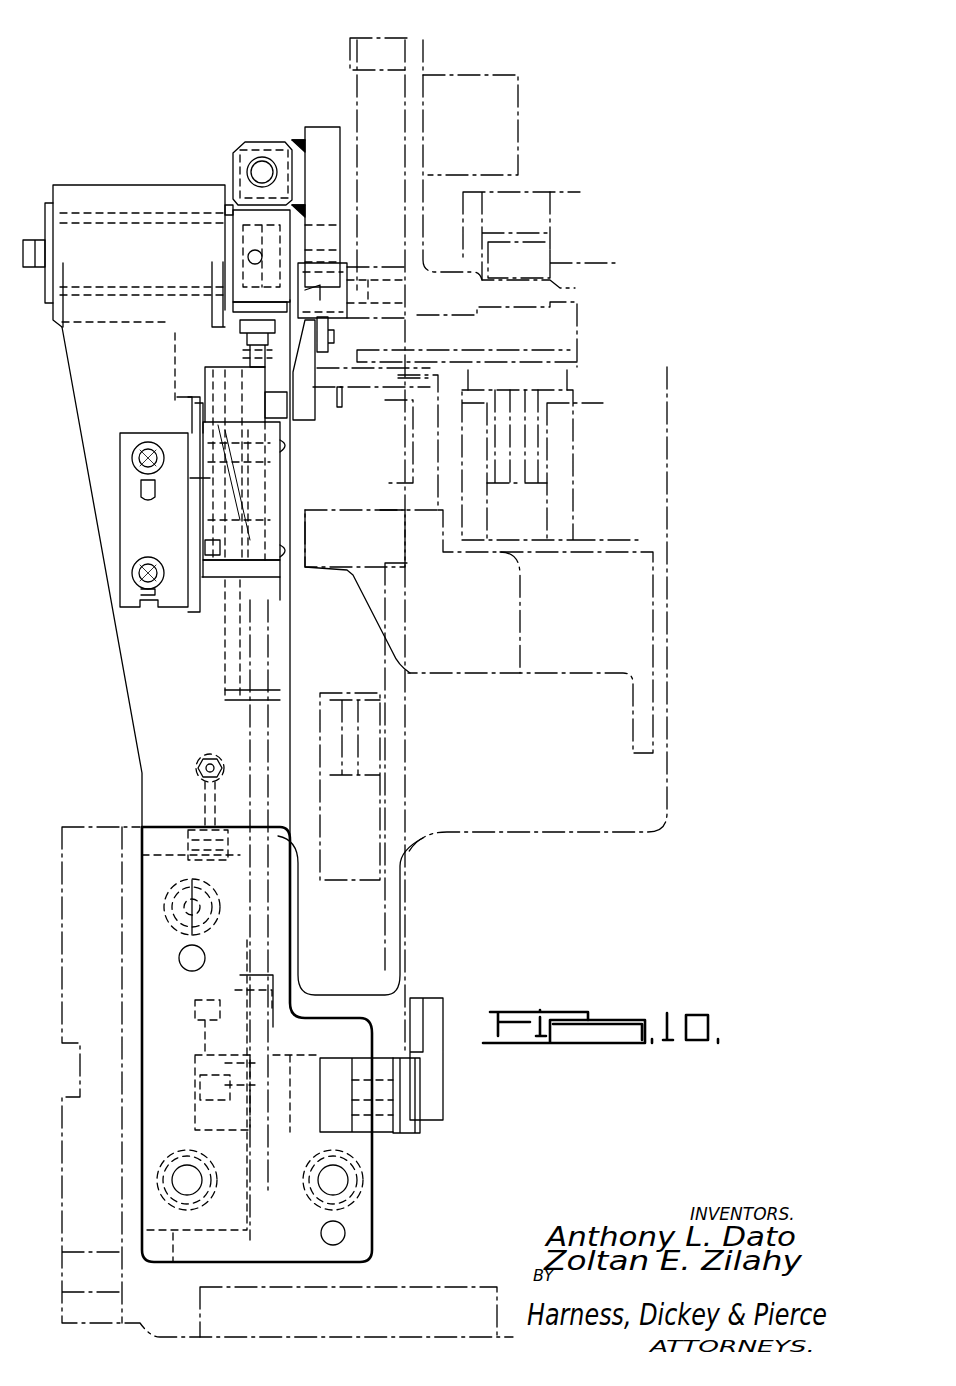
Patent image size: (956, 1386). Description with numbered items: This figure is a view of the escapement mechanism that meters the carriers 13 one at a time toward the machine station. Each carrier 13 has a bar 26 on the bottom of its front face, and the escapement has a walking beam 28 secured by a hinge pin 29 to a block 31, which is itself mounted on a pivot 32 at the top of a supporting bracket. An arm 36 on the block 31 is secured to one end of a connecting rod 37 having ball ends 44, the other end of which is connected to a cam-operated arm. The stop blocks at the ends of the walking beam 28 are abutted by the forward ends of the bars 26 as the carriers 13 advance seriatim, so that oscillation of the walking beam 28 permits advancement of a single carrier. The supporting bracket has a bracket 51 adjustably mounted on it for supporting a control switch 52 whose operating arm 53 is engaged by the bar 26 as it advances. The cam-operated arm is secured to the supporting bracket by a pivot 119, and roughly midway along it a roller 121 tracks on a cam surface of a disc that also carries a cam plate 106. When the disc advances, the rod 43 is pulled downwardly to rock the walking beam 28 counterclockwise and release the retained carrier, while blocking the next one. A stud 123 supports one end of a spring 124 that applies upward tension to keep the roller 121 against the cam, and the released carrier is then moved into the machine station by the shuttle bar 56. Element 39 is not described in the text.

The carrier 13 is at (395, 58).
The bar 26 is at (340, 297).
The walking beam 28 is at (322, 128).
The hinge pin 29 is at (263, 160).
The block 31 is at (232, 195).
The pivot 32 is at (75, 240).
The arm 36 is at (237, 242).
The connecting rod 37 is at (240, 323).
The slide plate 39 is at (290, 650).
The rod 43 is at (290, 748).
The ball ends 44 is at (195, 1033).
The bracket 51 is at (120, 503).
The control switch 52 is at (280, 383).
The operating arm 53 is at (300, 407).
The shuttle bar 56 is at (403, 480).
The cam plate 106 is at (437, 1037).
The pivot 119 is at (410, 1135).
The roller 121 is at (443, 1113).
The stud 123 is at (197, 757).
The spring 124 is at (193, 842).